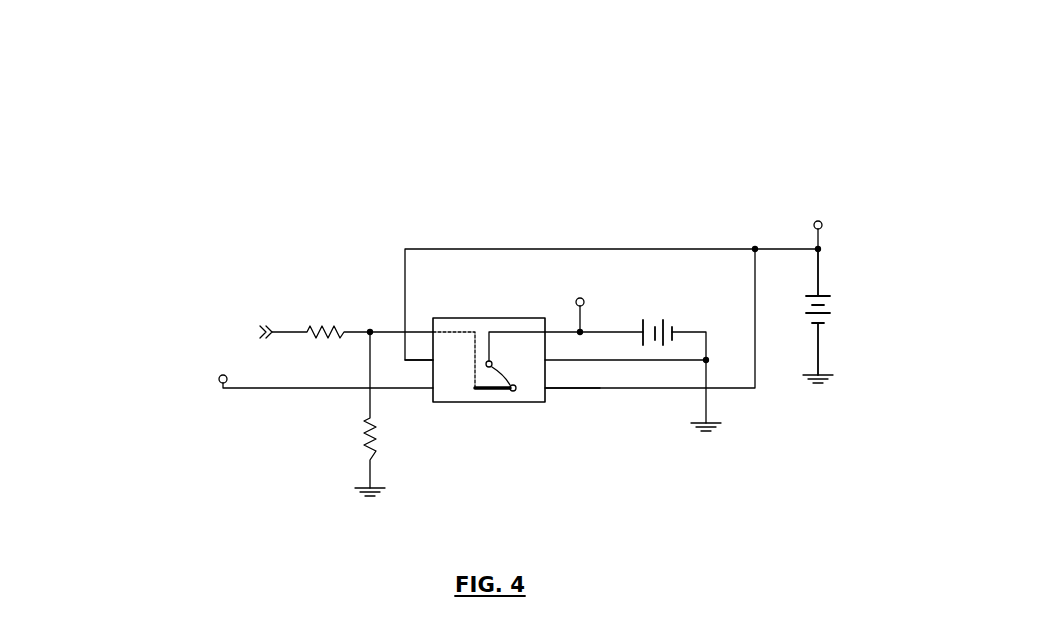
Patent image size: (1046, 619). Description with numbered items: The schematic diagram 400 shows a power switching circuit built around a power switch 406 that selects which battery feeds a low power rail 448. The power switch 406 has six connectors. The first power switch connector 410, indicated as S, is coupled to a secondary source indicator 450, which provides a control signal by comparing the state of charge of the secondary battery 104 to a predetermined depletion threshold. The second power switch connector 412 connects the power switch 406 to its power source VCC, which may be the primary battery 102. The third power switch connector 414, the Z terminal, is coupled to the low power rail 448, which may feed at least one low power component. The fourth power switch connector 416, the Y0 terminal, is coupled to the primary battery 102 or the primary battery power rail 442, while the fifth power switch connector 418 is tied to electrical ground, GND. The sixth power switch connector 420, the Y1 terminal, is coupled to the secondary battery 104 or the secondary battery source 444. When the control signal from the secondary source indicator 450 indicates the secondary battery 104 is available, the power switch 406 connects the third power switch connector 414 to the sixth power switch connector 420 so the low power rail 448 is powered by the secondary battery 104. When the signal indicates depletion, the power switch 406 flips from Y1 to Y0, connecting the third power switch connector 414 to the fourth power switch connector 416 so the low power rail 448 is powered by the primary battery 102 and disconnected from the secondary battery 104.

The schematic diagram 400 is at (824, 85).
The primary battery 102 is at (830, 328).
The secondary battery 104 is at (658, 343).
The power switch 406 is at (462, 422).
The first power switch connector 410 is at (418, 317).
The second power switch connector 412 is at (410, 340).
The third power switch connector 414 is at (414, 385).
The fourth power switch connector 416 is at (560, 388).
The fifth power switch connector 418 is at (566, 357).
The sixth power switch connector 420 is at (561, 327).
The primary battery power rail 442 is at (815, 203).
The secondary battery source 444 is at (570, 283).
The low power rail 448 is at (202, 375).
The secondary source indicator 450 is at (223, 322).